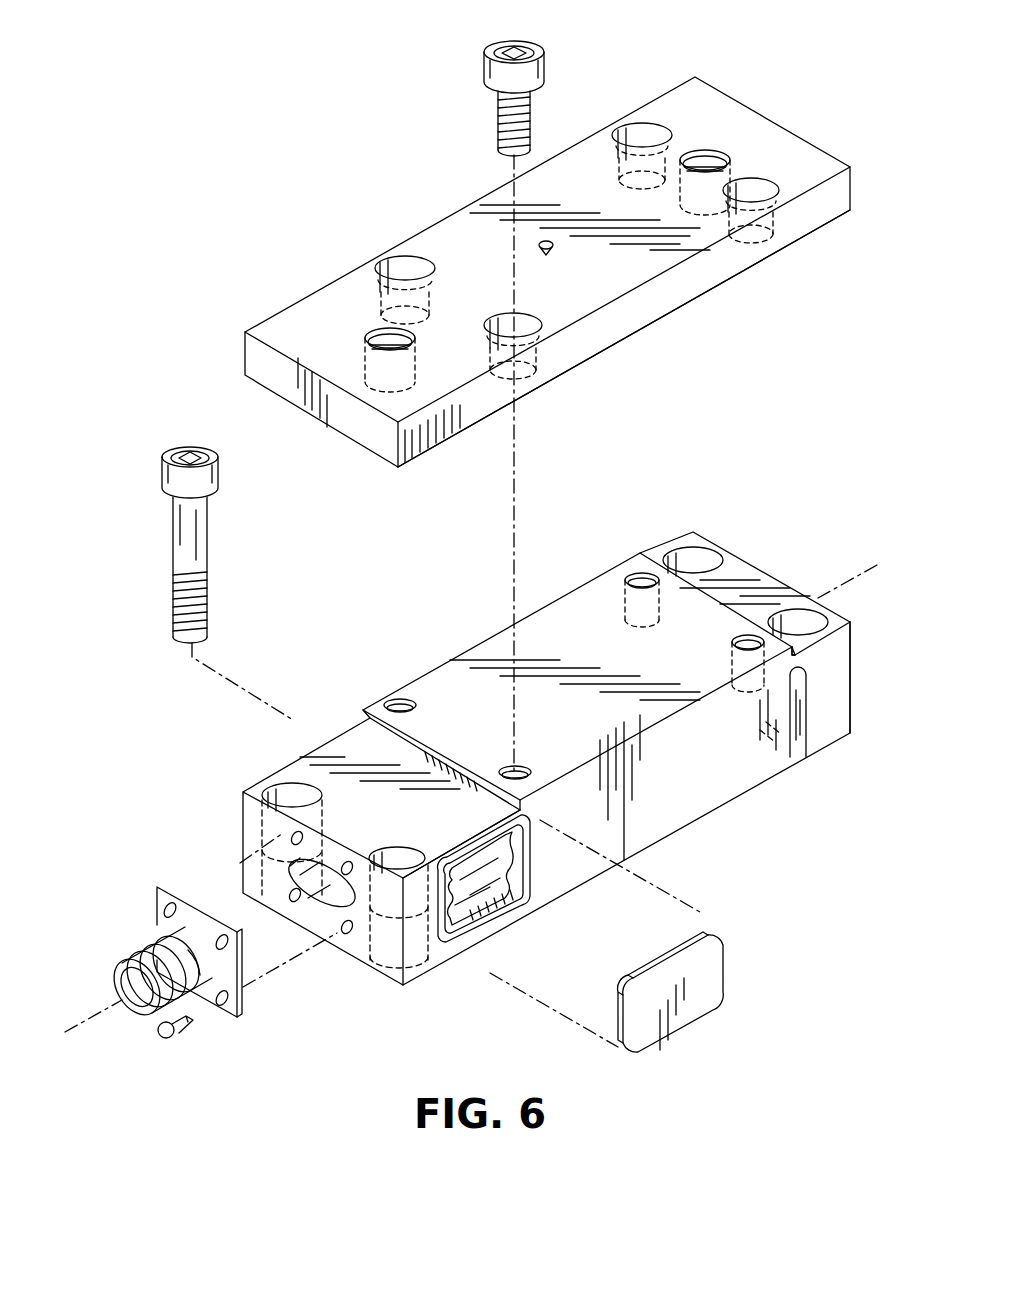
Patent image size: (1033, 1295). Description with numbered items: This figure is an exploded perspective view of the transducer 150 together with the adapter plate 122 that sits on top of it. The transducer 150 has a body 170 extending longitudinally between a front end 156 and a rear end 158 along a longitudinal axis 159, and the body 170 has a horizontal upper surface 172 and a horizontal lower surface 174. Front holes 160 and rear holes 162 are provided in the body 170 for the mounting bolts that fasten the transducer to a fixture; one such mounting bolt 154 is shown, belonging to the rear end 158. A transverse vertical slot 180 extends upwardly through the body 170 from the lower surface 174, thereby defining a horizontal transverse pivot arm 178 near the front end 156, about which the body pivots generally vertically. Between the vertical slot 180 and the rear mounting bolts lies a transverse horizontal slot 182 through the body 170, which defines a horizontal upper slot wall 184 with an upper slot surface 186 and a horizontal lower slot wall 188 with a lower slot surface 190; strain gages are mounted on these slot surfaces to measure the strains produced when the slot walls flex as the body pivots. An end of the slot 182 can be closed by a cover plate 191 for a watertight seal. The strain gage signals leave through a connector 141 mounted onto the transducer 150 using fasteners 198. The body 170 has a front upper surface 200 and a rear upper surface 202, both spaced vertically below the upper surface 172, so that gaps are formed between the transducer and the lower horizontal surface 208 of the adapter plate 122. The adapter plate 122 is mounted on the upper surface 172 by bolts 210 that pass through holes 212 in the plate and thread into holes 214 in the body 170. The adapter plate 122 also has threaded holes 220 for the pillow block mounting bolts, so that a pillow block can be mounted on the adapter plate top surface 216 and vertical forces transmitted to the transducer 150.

The adapter plate 122 is at (693, 296).
The connector 141 is at (157, 922).
The transducer 150 is at (553, 777).
The mounting bolt 154 is at (210, 532).
The front end 156 is at (852, 645).
The rear end 158 is at (365, 945).
The longitudinal axis 159 is at (868, 570).
The front holes 160 is at (683, 555).
The rear holes 162 is at (282, 788).
The body 170 is at (553, 764).
The upper surface 172 is at (500, 650).
The lower surface 174 is at (655, 835).
The pivot arm 178 is at (798, 658).
The vertical slot 180 is at (798, 718).
The horizontal slot 182 is at (503, 857).
The upper slot wall 184 is at (534, 837).
The upper slot surface 186 is at (463, 820).
The lower slot wall 188 is at (490, 925).
The lower slot surface 190 is at (523, 903).
The cover plate 191 is at (706, 973).
The fasteners 198 is at (185, 1028).
The front upper surface 200 is at (735, 575).
The rear upper surface 202 is at (342, 750).
The lower horizontal surface 208 is at (637, 333).
The bolts 210 is at (487, 65).
The holes 212 is at (642, 125).
The threaded holes 214 is at (635, 572).
The top surface 216 is at (462, 230).
The threaded holes 220 is at (725, 150).